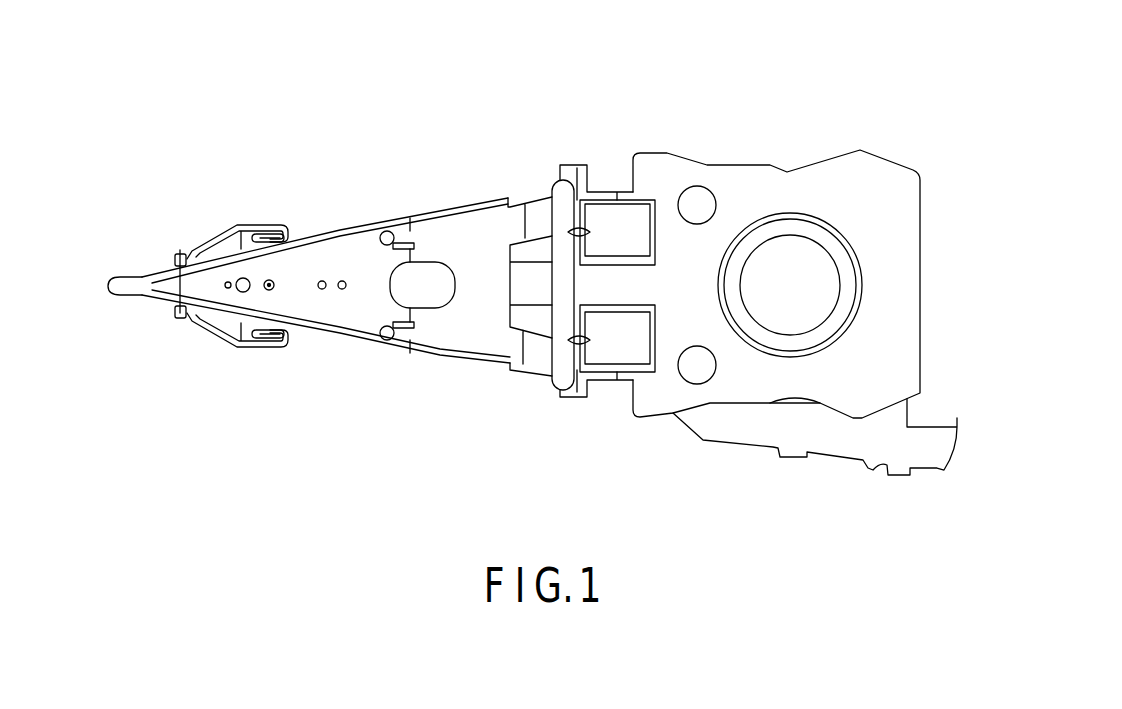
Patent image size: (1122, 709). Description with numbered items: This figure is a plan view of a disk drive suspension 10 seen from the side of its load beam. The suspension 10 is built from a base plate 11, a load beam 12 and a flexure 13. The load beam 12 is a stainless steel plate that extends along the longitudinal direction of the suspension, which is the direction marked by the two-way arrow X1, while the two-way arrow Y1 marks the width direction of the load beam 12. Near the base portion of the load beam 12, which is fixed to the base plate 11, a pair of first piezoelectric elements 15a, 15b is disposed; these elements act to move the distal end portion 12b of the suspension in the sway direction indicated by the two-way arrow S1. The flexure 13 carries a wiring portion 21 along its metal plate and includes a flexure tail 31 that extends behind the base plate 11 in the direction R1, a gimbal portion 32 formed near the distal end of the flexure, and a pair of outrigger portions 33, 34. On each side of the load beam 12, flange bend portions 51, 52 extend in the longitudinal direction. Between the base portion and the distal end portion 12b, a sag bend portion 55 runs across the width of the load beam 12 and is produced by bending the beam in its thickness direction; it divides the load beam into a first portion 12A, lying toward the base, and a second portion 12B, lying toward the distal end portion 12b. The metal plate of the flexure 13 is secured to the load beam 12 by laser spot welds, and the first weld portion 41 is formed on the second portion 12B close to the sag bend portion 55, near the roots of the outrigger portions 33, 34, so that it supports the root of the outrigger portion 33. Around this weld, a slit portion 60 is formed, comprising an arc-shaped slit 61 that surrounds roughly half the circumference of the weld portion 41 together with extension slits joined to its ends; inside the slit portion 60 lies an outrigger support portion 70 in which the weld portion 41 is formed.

The suspension 10 is at (712, 75).
The base plate 11 is at (804, 185).
The load beam 12 is at (466, 188).
The first portion 12A is at (487, 220).
The second portion 12B is at (255, 330).
The distal end portion 12b is at (128, 277).
The flexure 13 is at (251, 198).
The first piezoelectric element 15a is at (602, 220).
The first piezoelectric element 15b is at (603, 352).
The wiring portion 21 is at (537, 233).
The flexure tail 31 is at (931, 455).
The gimbal portion 32 is at (222, 238).
The outrigger portion 33 is at (295, 335).
The outrigger portion 34 is at (300, 234).
The first weld portion 41 is at (392, 227).
The flange bend portion 51 is at (443, 352).
The flange bend portion 52 is at (442, 207).
The sag bend portion 55 is at (410, 310).
The slit portion 60 is at (366, 243).
The arc-shaped slit 61 is at (372, 231).
The outrigger support portion 70 is at (410, 237).
The longitudinal direction arrow X1 is at (523, 453).
The width direction arrow Y1 is at (943, 275).
The rearward direction R1 is at (840, 497).
The sway direction arrow S1 is at (91, 262).